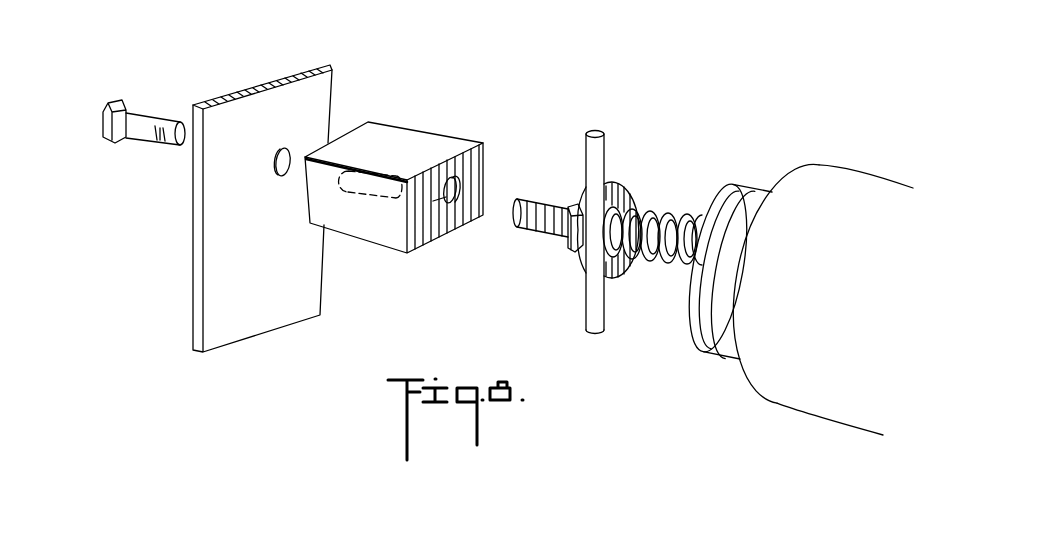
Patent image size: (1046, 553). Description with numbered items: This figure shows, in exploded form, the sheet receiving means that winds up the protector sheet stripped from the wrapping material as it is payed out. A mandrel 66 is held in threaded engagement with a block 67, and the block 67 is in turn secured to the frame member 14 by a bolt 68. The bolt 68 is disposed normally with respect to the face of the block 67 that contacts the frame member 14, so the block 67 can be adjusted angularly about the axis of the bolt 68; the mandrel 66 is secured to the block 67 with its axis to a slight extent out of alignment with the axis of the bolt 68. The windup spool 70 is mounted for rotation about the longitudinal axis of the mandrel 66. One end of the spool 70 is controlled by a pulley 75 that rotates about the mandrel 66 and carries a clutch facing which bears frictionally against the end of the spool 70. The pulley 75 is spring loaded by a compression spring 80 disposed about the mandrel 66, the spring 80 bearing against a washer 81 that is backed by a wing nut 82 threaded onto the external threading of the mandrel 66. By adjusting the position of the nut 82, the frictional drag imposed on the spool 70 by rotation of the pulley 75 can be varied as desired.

The frame member 14 is at (312, 100).
The mandrel 66 is at (542, 200).
The block 67 is at (428, 140).
The bolt 68 is at (155, 142).
The windup spool 70 is at (802, 285).
The pulley 75 is at (727, 335).
The compression spring 80 is at (673, 213).
The washer 81 is at (613, 273).
The wing nut 82 is at (600, 155).